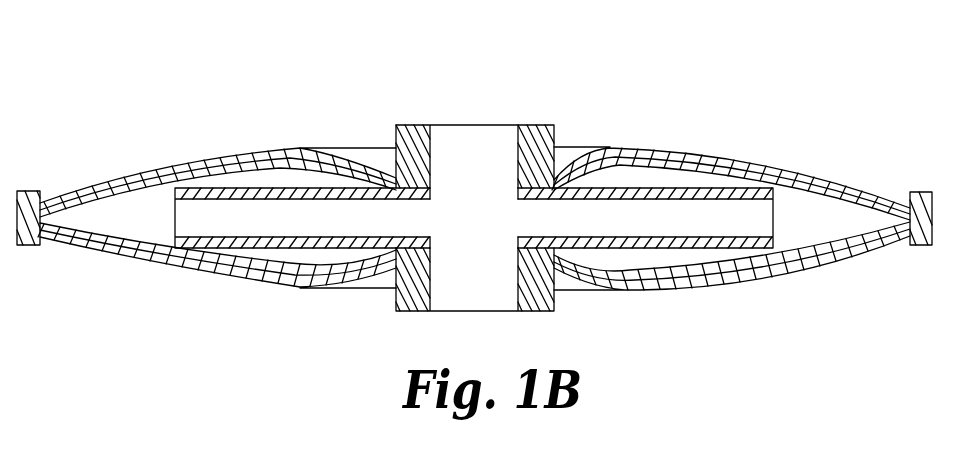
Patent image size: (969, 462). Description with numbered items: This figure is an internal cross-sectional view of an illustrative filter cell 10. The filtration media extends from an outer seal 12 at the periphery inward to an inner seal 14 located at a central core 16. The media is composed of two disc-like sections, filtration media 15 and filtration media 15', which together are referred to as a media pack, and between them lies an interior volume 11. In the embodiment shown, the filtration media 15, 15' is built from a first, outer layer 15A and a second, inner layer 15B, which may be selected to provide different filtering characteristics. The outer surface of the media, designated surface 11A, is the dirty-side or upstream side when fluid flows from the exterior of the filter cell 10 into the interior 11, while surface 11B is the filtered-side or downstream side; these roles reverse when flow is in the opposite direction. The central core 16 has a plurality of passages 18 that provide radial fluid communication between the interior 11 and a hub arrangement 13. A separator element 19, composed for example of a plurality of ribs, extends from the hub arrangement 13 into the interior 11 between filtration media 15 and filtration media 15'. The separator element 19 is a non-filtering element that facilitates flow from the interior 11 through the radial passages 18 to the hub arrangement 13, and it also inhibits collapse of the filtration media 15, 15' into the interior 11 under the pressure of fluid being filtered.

The filter cell 10 is at (772, 90).
The interior volume 11 is at (157, 217).
The outer surface 11A is at (162, 168).
The downstream surface 11B is at (70, 240).
The outer seal 12 is at (922, 188).
The hub arrangement 13 is at (428, 123).
The inner seal 14 is at (407, 128).
The filtration media 15 is at (218, 155).
The outer layer 15A is at (714, 152).
The filtration media 15' is at (217, 288).
The inner layer 15B is at (757, 262).
The central core 16 is at (512, 128).
The passages 18 is at (428, 218).
The separator element 19 is at (614, 248).